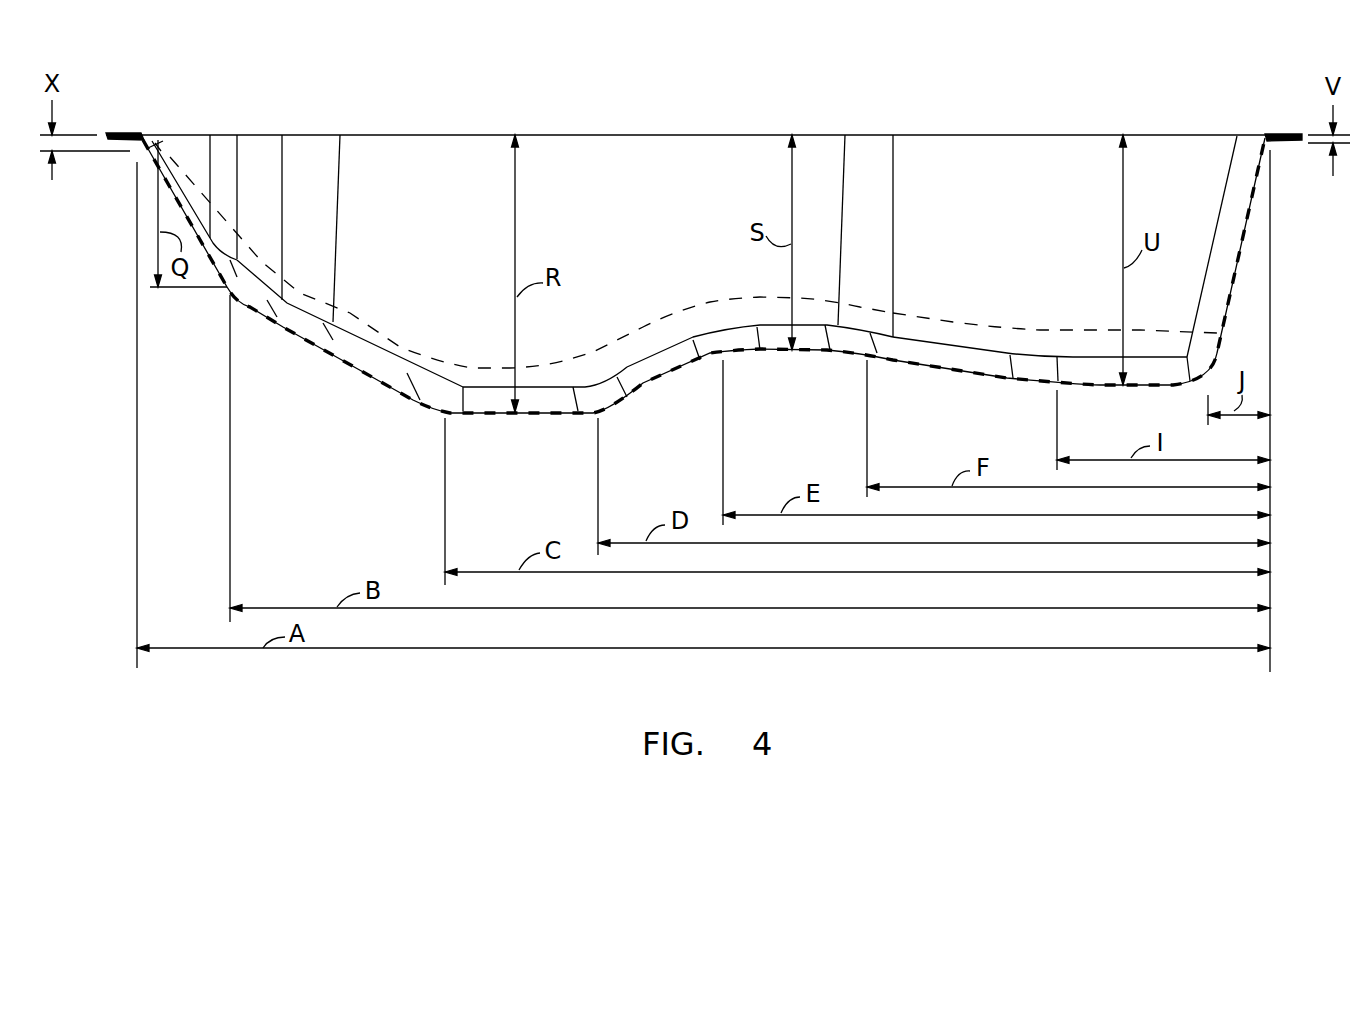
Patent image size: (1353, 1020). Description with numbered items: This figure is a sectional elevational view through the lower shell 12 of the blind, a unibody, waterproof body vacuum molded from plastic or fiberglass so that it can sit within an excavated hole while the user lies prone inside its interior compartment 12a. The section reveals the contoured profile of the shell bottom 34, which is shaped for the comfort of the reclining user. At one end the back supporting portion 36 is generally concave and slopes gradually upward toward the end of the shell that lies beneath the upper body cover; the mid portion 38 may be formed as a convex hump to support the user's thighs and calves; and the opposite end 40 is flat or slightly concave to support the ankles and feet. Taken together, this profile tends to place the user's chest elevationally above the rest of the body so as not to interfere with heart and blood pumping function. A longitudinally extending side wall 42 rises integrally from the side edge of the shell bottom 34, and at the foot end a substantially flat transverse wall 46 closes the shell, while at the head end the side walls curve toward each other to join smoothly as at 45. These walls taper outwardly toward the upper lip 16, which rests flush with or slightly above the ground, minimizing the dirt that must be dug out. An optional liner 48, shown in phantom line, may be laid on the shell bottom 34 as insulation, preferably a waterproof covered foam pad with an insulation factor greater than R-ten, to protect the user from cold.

The lower shell 12 is at (357, 383).
The interior compartment 12a is at (688, 228).
The upper lip 16 is at (121, 133).
The shell bottom 34 is at (546, 376).
The back supporting portion 36 is at (303, 343).
The mid portion 38 is at (778, 356).
The opposite end 40 is at (1097, 386).
The side wall 42 is at (409, 238).
The joint of side walls at head portion 45 is at (158, 147).
The transverse wall 46 is at (1238, 277).
The liner 48 is at (970, 325).